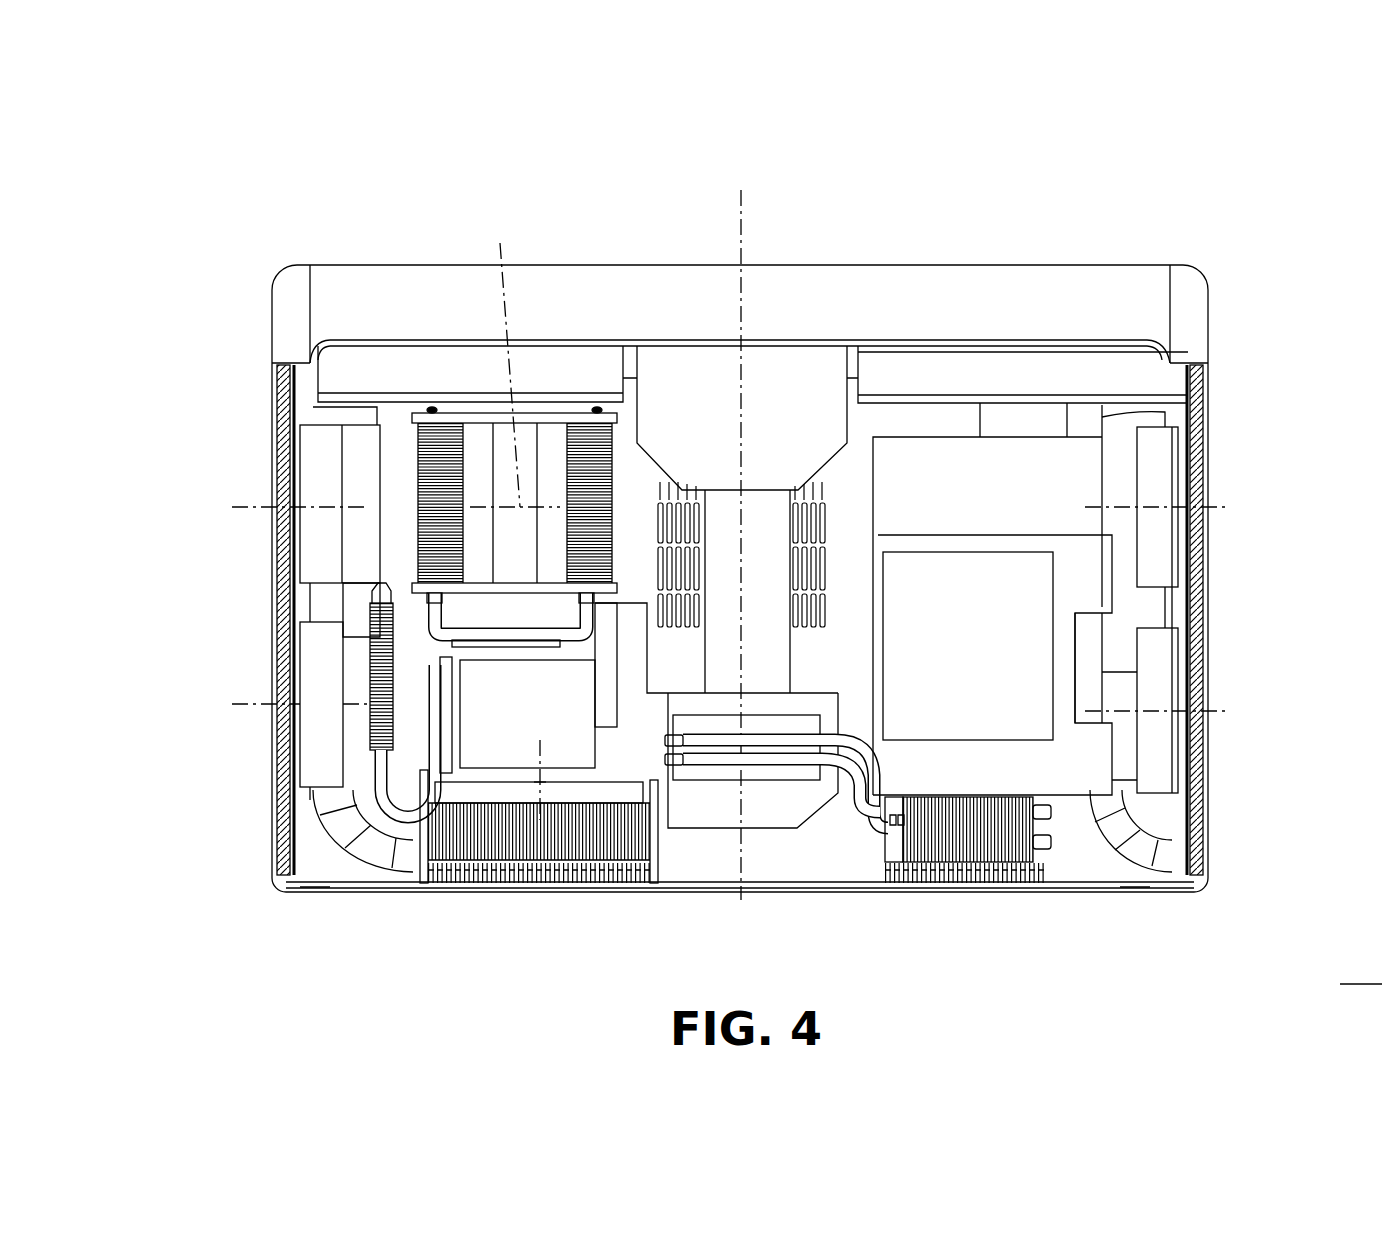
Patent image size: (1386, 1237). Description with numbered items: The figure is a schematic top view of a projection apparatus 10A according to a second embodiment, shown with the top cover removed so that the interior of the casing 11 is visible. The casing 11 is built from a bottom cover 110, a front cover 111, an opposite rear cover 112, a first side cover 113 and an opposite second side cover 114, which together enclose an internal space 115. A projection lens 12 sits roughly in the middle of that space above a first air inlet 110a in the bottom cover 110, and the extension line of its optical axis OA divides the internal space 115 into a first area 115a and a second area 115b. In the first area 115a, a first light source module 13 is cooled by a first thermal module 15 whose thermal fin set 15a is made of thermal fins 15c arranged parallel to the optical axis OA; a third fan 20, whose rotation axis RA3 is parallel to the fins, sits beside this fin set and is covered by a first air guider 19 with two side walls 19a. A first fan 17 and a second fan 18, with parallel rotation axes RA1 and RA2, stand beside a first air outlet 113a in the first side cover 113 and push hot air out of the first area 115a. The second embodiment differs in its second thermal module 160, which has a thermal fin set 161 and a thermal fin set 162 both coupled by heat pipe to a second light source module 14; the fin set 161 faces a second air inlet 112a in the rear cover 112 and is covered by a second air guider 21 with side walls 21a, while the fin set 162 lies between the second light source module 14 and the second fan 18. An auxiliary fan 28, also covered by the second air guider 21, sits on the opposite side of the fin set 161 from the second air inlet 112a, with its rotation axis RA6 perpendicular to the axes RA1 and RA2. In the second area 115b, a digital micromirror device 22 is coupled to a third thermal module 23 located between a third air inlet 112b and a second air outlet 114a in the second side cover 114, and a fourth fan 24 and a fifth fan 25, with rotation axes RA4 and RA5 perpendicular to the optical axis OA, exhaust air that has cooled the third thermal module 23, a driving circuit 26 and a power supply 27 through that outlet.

The projection apparatus 10A is at (1361, 967).
The casing 11 is at (92, 144).
The bottom cover 110 is at (882, 417).
The first air inlet 110a is at (683, 638).
The front cover 111 is at (340, 273).
The rear cover 112 is at (362, 885).
The second air inlet 112a is at (538, 897).
The third air inlet 112b is at (880, 862).
The first side cover 113 is at (290, 878).
The first air outlet 113a is at (268, 636).
The second side cover 114 is at (1190, 880).
The second air outlet 114a is at (1233, 541).
The internal space 115 is at (753, 268).
The first area 115a is at (541, 382).
The second area 115b is at (1068, 377).
The projection lens 12 is at (785, 358).
The first light source module 13 is at (477, 656).
The second light source module 14 is at (457, 733).
The first thermal module 15 is at (429, 397).
The thermal fin set 15a is at (405, 445).
The thermal fins 15c is at (427, 430).
The first fan 17 is at (307, 457).
The second fan 18 is at (318, 773).
The first air guider 19 is at (318, 511).
The side walls 19a is at (470, 418).
The third fan 20 is at (527, 447).
The second air guider 21 is at (585, 874).
The side walls 21a is at (428, 855).
The digital micromirror device 22 is at (810, 800).
The third thermal module 23 is at (1033, 848).
The fourth fan 24 is at (1158, 448).
The fifth fan 25 is at (1165, 760).
The driving circuit 26 is at (1040, 603).
The power supply 27 is at (1068, 655).
The auxiliary fan 28 is at (383, 820).
The second thermal module 160 is at (644, 784).
The thermal fin set 161 is at (615, 852).
The thermal fin set 162 is at (362, 637).
The optical axis OA is at (740, 527).
The rotation axis RA1 is at (369, 509).
The rotation axis RA2 is at (276, 706).
The rotation axis RA3 is at (500, 357).
The rotation axis RA4 is at (1181, 507).
The rotation axis RA5 is at (1181, 709).
The rotation axis RA6 is at (540, 792).